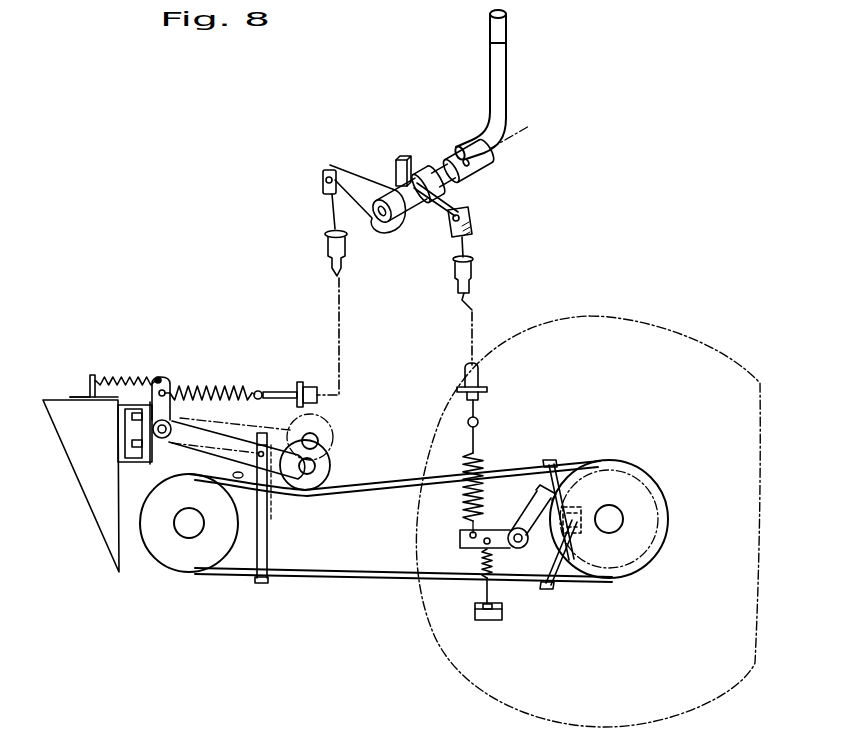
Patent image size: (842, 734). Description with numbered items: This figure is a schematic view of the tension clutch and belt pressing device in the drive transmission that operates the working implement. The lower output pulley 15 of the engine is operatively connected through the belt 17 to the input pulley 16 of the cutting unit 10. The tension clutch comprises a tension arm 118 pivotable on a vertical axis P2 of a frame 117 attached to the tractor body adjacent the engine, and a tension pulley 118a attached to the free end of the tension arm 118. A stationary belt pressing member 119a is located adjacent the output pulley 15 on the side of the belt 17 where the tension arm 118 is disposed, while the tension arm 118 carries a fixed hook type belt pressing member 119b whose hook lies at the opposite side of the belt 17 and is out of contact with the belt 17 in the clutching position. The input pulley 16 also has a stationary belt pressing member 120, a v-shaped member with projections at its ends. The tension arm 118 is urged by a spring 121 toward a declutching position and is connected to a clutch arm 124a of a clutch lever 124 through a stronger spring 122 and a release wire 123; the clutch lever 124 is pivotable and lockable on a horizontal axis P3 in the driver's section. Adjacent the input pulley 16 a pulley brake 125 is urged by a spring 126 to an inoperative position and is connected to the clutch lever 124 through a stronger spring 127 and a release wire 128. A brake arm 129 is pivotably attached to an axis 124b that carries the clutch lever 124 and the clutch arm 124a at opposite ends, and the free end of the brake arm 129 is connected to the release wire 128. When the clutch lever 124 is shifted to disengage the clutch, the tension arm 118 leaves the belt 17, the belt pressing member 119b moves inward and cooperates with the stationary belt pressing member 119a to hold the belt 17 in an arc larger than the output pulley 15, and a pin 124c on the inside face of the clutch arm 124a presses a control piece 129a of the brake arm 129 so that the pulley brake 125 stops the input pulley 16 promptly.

The cutting unit 10 is at (437, 640).
The lower output pulley 15 is at (180, 574).
The input pulley 16 is at (633, 462).
The belt 17 is at (348, 578).
The frame 117 is at (62, 400).
The tension arm 118 is at (277, 391).
The tension pulley 118a is at (333, 470).
The stationary belt pressing member 119a is at (236, 470).
The hook type belt pressing member 119b is at (256, 552).
The stationary belt pressing member 120 is at (565, 565).
The spring 121 is at (127, 380).
The spring 122 is at (175, 388).
The release wire 123 is at (318, 385).
The clutch lever 124 is at (507, 108).
The clutch arm 124a is at (340, 165).
The axis 124b is at (372, 230).
The pin 124c is at (421, 203).
The pulley brake 125 is at (531, 503).
The spring 126 is at (497, 585).
The spring 127 is at (482, 452).
The release wire 128 is at (478, 365).
The brake arm 129 is at (466, 207).
The control piece 129a is at (403, 157).
The vertical axis P2 is at (162, 438).
The horizontal axis P3 is at (525, 127).